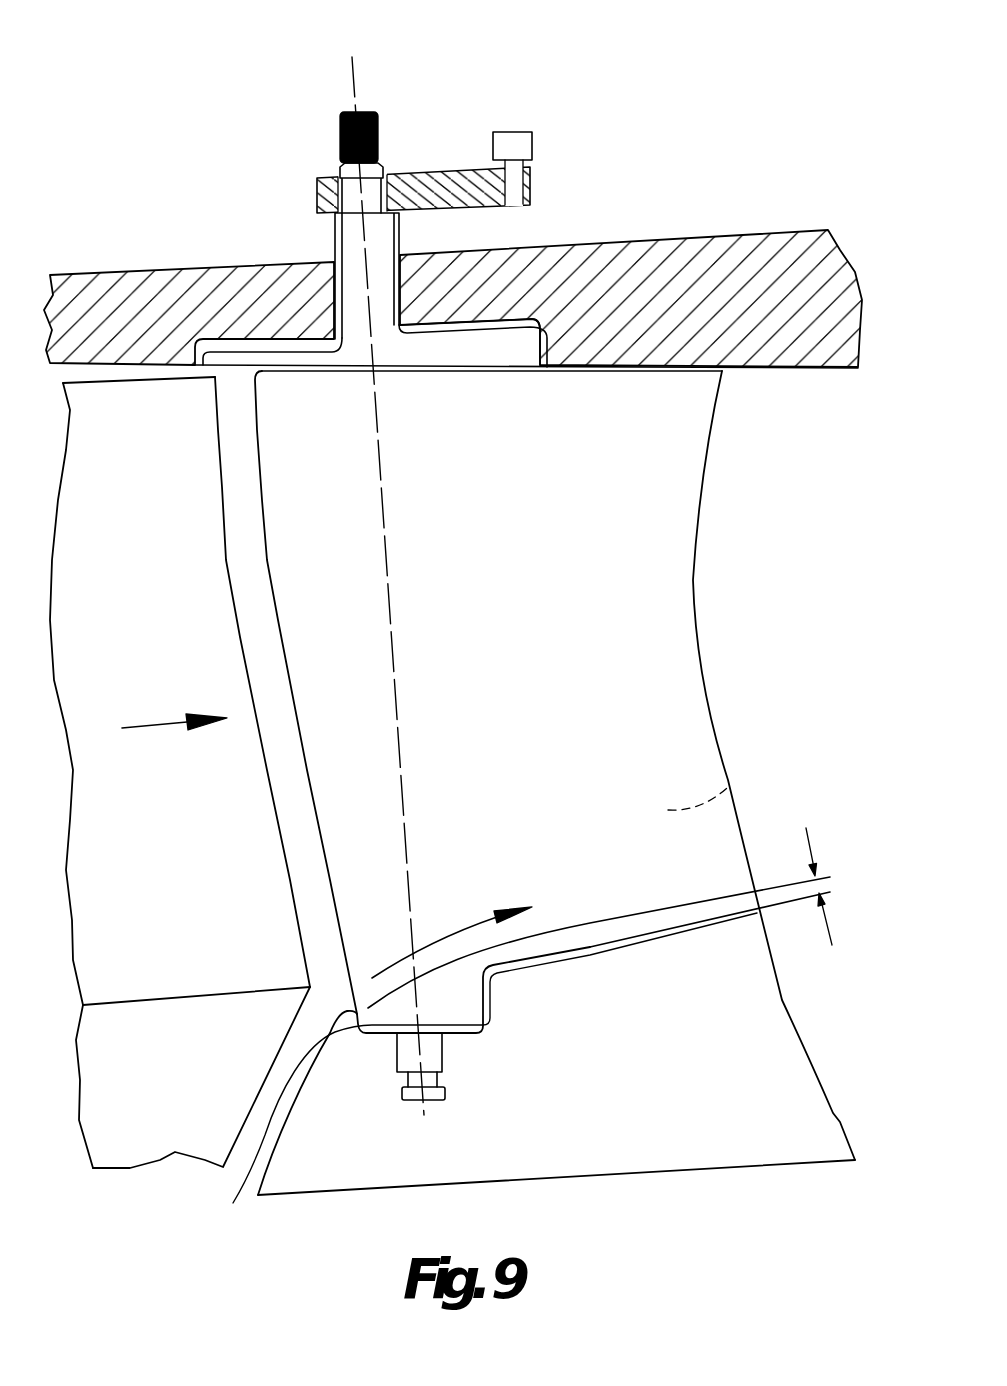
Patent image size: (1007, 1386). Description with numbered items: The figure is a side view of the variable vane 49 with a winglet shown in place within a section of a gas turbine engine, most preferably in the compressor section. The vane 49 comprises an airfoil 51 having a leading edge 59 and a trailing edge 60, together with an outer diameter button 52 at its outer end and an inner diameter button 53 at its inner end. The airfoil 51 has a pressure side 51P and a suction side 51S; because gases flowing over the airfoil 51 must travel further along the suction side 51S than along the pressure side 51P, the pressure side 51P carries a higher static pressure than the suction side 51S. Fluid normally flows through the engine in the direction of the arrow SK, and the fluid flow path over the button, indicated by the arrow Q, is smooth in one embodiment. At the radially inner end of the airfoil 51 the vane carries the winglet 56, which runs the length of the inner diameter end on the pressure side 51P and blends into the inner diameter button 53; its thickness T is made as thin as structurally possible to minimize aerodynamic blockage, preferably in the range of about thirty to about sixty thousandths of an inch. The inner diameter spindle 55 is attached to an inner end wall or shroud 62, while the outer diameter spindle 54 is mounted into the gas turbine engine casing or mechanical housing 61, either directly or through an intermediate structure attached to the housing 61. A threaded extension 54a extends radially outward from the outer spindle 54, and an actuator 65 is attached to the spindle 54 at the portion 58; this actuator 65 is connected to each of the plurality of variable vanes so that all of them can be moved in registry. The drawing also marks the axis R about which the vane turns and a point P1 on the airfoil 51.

The variable vane 49 is at (830, 390).
The airfoil 51 is at (555, 765).
The pressure side 51P is at (648, 452).
The suction side 51S is at (727, 787).
The outer diameter button 52 is at (510, 352).
The inner diameter button 53 is at (233, 1205).
The outer spindle 54 is at (352, 275).
The threaded extension 54a is at (338, 133).
The inner spindle 55 is at (443, 1050).
The winglet 56 is at (742, 900).
The portion 58 is at (382, 165).
The leading edge 59 is at (270, 565).
The trailing edge 60 is at (712, 699).
The mechanical housing 61 is at (703, 276).
The inner end wall 62 is at (640, 1100).
The actuator 65 is at (533, 176).
The pivot axis R is at (352, 70).
The fluid flow path arrow Q is at (470, 928).
The fluid flow direction arrow SK is at (174, 697).
The pivot point P1 is at (738, 614).
The winglet thickness T is at (835, 886).